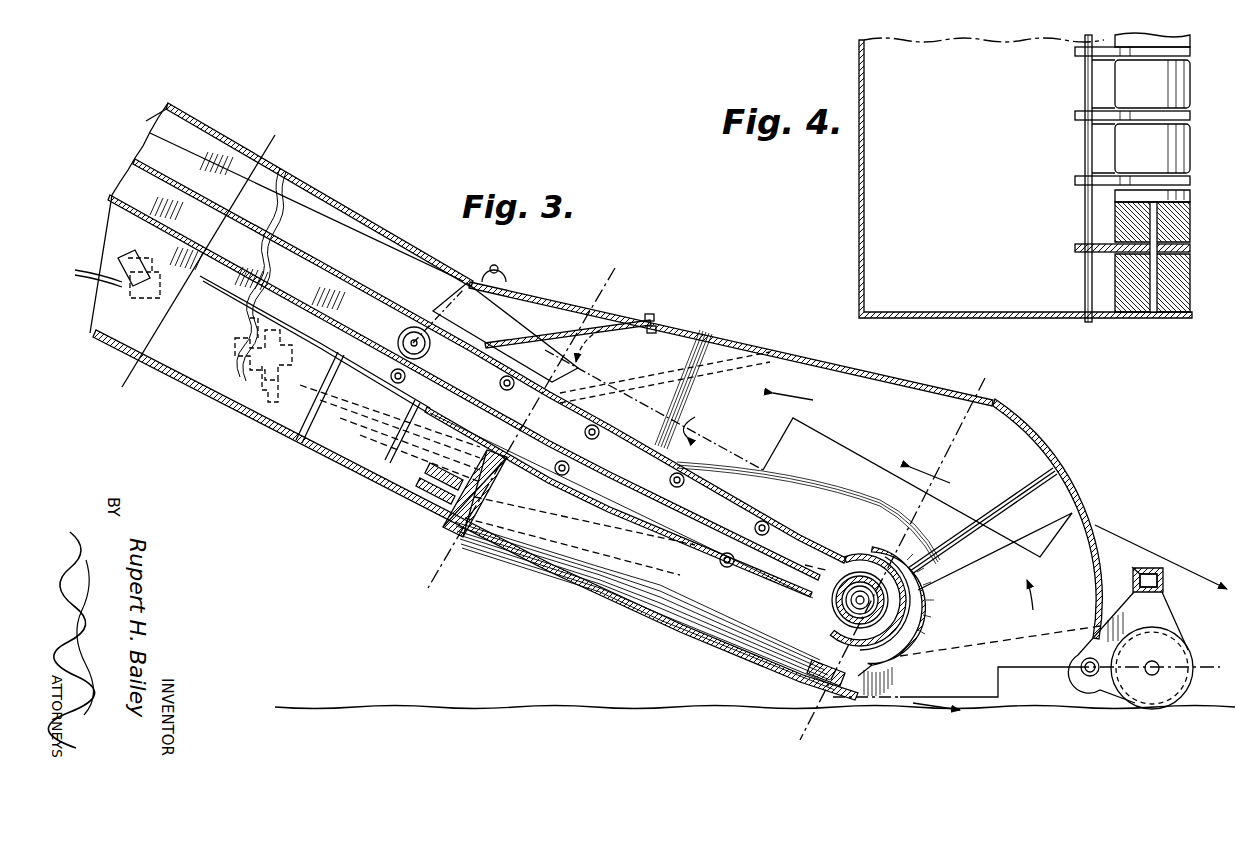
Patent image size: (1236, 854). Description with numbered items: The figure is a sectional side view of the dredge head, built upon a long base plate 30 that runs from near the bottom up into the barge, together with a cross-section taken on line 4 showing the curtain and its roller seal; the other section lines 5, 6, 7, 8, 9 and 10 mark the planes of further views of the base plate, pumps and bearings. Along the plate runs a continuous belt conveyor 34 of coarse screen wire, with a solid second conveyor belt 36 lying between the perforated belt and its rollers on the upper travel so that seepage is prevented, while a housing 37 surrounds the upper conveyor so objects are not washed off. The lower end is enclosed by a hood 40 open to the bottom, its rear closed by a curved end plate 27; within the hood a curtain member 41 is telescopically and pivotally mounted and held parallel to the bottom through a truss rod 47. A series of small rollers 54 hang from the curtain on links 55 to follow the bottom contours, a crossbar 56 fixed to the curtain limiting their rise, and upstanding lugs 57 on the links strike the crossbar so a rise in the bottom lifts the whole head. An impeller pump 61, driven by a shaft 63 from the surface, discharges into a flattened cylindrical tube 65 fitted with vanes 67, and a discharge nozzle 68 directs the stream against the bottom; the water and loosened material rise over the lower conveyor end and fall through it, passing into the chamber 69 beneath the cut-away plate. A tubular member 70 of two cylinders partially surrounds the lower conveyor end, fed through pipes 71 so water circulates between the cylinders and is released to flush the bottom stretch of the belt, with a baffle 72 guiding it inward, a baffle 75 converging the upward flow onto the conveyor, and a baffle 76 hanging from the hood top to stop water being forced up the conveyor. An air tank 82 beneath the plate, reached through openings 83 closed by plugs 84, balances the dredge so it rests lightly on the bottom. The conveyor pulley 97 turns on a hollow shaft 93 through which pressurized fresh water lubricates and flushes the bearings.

In FIG. 3, the section line 4— 4 is at (836, 700).
In FIG. 3, the section line 5— 5 is at (158, 98).
In FIG. 3, the section line 6— 6 is at (62, 284).
In FIG. 3, the section line 7— 7 is at (806, 548).
In FIG. 3, the section line 8— 8 is at (985, 387).
In FIG. 3, the section line 9— 9 is at (636, 291).
In FIG. 3, the section line 10— 10 is at (296, 150).
In FIG. 3, the curved hood end plate 27 is at (1027, 428).
In FIG. 3, the base plate 30 is at (631, 596).
In FIG. 3, the continuous belt conveyor 34 is at (638, 454).
In FIG. 3, the second conveyor belt 36 is at (413, 328).
In FIG. 3, the housing 37 is at (382, 230).
In FIG. 3, the hood 40 is at (907, 380).
In FIG. 3, the curtain member 41 is at (1098, 530).
In FIG. 4, the curtain member 41 is at (1062, 318).
In FIG. 3, the truss rod 47 is at (120, 255).
In FIG. 3, the small rollers 54 is at (1172, 704).
In FIG. 4, the small rollers 54 is at (1190, 72).
In FIG. 3, the links 55 is at (1096, 690).
In FIG. 4, the links 55 is at (1190, 184).
In FIG. 3, the crossbar 56 is at (1156, 574).
In FIG. 3, the upstanding lugs 57 is at (1168, 612).
In FIG. 4, the upstanding lugs 57 is at (1172, 120).
In FIG. 3, the impeller pump 61 is at (445, 505).
In FIG. 3, the shaft 63 is at (104, 284).
In FIG. 3, the cylindrical tube 65 is at (642, 600).
In FIG. 3, the vanes 67 is at (482, 543).
In FIG. 3, the discharge nozzle 68 is at (812, 664).
In FIG. 3, the chamber 69 is at (402, 487).
In FIG. 3, the tubular member 70 is at (938, 548).
In FIG. 3, the pipes 71 is at (586, 580).
In FIG. 3, the baffle 72 is at (926, 601).
In FIG. 3, the baffle 75 is at (823, 390).
In FIG. 3, the baffle 76 is at (565, 334).
In FIG. 3, the air tank 82 is at (203, 362).
In FIG. 3, the openings 83 is at (658, 326).
In FIG. 3, the plugs 84 is at (650, 317).
In FIG. 3, the hollow shaft 93 is at (862, 588).
In FIG. 3, the conveyor pulley 97 is at (832, 586).